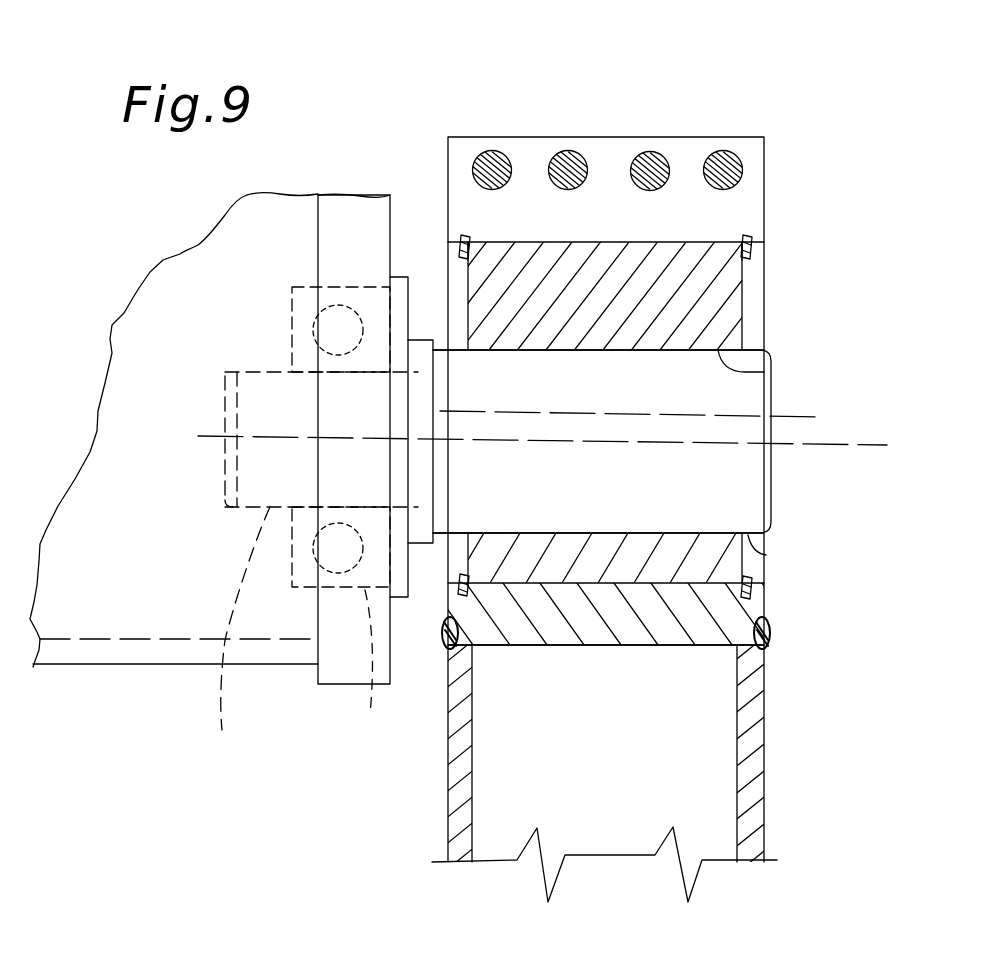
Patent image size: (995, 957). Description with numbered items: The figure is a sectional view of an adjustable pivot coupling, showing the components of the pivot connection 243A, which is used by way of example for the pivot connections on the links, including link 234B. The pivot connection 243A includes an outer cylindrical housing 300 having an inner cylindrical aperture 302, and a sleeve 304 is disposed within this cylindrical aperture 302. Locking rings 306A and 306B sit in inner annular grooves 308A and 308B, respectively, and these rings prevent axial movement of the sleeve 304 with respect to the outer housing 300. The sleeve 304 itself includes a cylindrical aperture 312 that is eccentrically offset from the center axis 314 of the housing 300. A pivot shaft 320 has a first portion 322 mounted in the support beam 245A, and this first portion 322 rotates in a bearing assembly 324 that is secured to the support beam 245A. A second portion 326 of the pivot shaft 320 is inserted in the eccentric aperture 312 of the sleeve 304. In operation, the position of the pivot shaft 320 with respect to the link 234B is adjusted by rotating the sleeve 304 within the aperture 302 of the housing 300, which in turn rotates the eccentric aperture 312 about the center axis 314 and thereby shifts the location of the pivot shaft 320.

The link 234B is at (767, 722).
The pivot connection 243A is at (398, 160).
The support beam 245A is at (62, 666).
The outer cylindrical housing 300 is at (749, 146).
The inner cylindrical aperture 302 is at (627, 248).
The sleeve 304 is at (748, 278).
The locking ring 306A is at (466, 236).
The locking ring 306B is at (746, 236).
The inner annular groove 308A is at (463, 234).
The inner annular groove 308B is at (745, 233).
The cylindrical aperture 312 is at (770, 365).
The center axis 314 is at (803, 417).
The pivot shaft 320 is at (773, 490).
The first portion 322 is at (240, 640).
The bearing assembly 324 is at (378, 674).
The second portion 326 is at (766, 555).